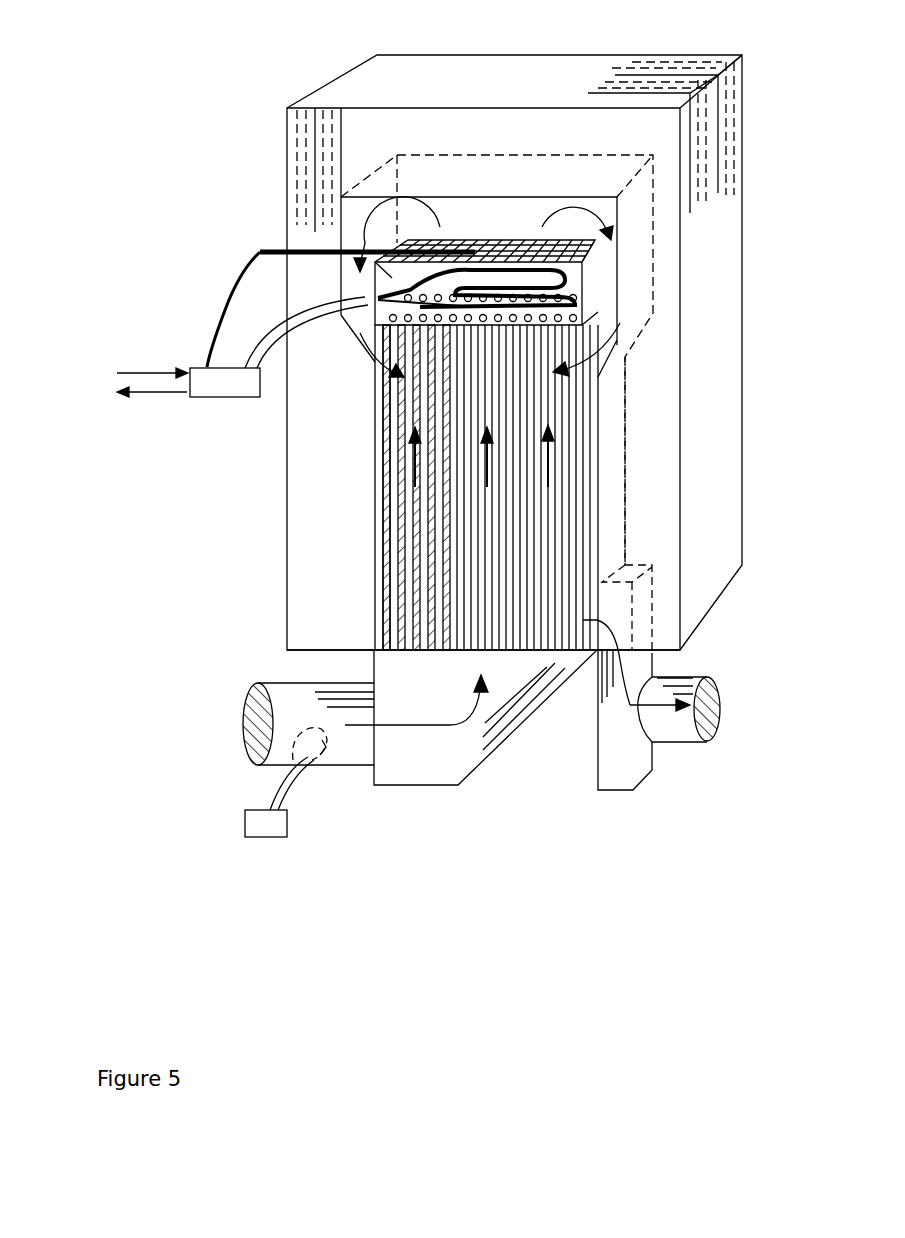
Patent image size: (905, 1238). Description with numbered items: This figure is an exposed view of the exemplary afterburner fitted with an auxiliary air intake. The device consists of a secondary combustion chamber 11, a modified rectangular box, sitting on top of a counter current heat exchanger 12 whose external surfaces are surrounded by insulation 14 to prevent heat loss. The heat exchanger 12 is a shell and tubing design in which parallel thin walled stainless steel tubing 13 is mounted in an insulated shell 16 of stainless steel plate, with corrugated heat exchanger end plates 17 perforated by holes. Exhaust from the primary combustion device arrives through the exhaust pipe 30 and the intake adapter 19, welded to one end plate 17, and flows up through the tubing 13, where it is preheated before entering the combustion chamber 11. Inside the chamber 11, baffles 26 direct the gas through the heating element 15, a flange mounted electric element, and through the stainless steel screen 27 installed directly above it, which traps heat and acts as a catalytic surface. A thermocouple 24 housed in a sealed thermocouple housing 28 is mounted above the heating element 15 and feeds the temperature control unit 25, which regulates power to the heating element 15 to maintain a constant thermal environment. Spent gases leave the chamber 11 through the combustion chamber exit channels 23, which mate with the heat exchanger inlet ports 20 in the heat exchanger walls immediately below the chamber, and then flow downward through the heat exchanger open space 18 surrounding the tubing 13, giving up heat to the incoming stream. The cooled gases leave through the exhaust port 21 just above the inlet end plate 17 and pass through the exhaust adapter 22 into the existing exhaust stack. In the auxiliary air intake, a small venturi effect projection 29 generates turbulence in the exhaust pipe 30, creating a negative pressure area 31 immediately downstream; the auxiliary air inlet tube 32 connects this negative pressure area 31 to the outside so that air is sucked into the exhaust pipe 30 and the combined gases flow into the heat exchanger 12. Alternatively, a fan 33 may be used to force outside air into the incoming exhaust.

The secondary combustion chamber 11 is at (490, 277).
The heat exchanger 12 is at (532, 508).
The stainless steel tubing 13 is at (385, 511).
The insulation 14 is at (387, 127).
The heating element 15 is at (560, 295).
The shell 16 is at (613, 405).
The heat exchanger end plates 17 is at (578, 318).
The heat exchanger open space 18 is at (388, 538).
The intake adapter 19 is at (458, 748).
The heat exchanger inlet ports 20 is at (353, 323).
The exhaust port 21 is at (612, 608).
The exhaust adapter 22 is at (615, 770).
The combustion chamber exit channels 23 is at (357, 280).
The thermocouple 24 is at (357, 270).
The temperature control unit 25 is at (225, 382).
The baffles 26 is at (385, 272).
The stainless steel screen 27 is at (590, 252).
The thermocouple housing 28 is at (490, 238).
The venturi effect projection 29 is at (308, 763).
The exhaust pipe 30 is at (283, 732).
The negative pressure area 31 is at (333, 755).
The auxiliary air inlet tube 32 is at (303, 777).
The fan 33 is at (257, 837).